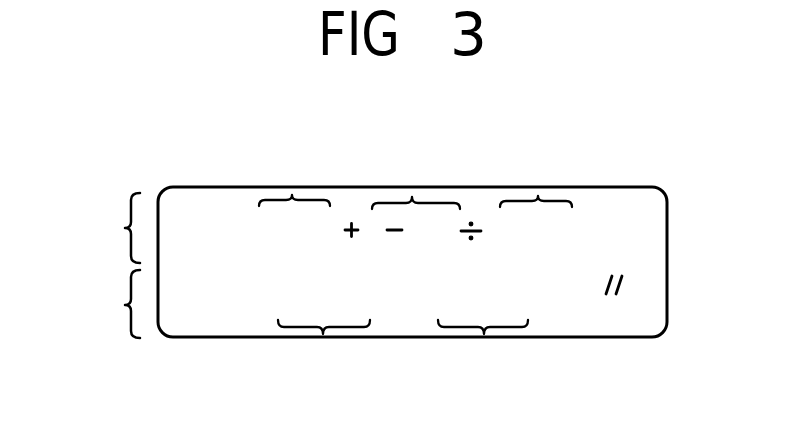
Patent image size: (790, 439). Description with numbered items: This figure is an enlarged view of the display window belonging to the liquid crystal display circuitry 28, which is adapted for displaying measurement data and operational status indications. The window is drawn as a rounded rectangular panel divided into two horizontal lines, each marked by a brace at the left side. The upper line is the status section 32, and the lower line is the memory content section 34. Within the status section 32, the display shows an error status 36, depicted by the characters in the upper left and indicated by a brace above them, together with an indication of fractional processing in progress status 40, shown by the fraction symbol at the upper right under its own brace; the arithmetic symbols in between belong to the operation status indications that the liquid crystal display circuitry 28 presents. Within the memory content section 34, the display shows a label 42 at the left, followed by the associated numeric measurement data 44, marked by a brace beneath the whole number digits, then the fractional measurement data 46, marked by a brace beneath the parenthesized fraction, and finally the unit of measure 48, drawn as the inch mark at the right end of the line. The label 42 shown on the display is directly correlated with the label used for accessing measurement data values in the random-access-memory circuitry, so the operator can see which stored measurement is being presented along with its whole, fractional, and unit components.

The liquid crystal display circuitry 28 is at (412, 197).
The status section 32 is at (128, 228).
The memory content section 34 is at (128, 305).
The error status 36 is at (292, 195).
The fractional processing in progress status 40 is at (538, 196).
The label 42 is at (205, 327).
The numeric measurement data 44 is at (323, 334).
The fractional measurement data 46 is at (484, 334).
The unit of measure 48 is at (614, 302).